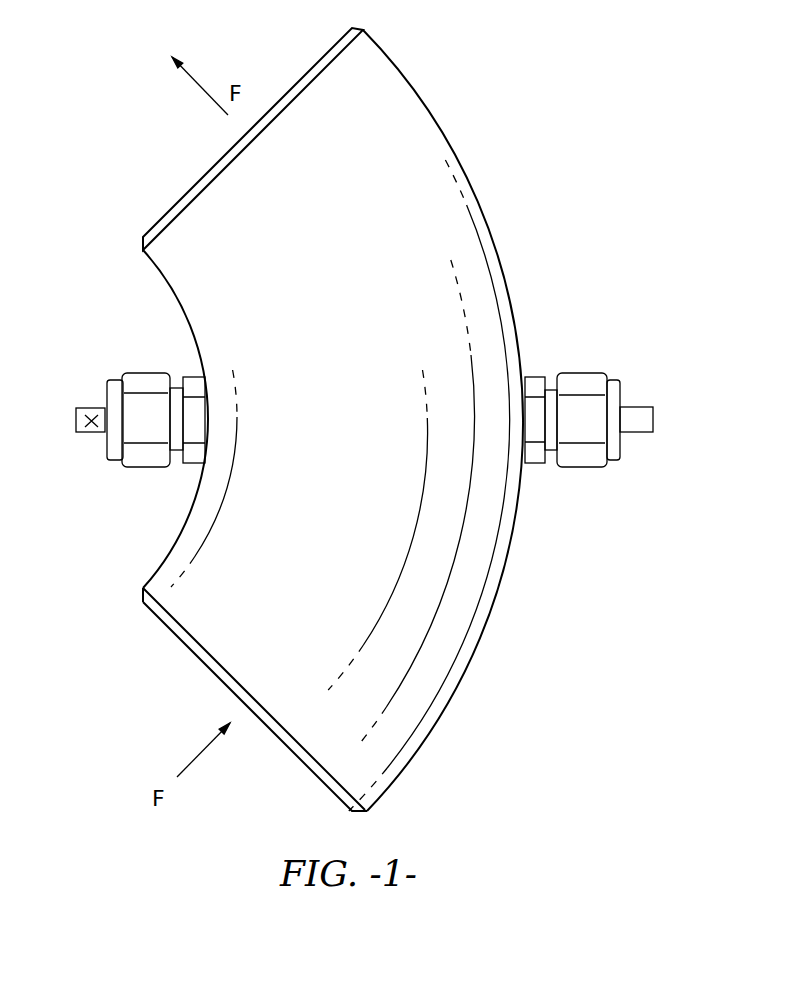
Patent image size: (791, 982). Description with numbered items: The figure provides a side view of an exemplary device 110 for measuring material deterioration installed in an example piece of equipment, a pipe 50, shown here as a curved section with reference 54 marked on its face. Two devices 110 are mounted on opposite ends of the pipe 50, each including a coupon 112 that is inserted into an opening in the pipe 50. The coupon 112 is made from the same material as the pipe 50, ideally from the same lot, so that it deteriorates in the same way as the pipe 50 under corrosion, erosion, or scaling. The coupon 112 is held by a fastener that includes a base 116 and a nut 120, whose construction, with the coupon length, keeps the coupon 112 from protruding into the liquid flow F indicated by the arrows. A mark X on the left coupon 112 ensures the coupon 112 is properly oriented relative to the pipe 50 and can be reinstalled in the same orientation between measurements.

The pipe 50 is at (342, 417).
The plate surface 54 is at (539, 719).
The device for measuring material deterioration 110 is at (362, 425).
The coupon 112 is at (93, 405).
The base 116 is at (193, 385).
The nut 120 is at (143, 377).